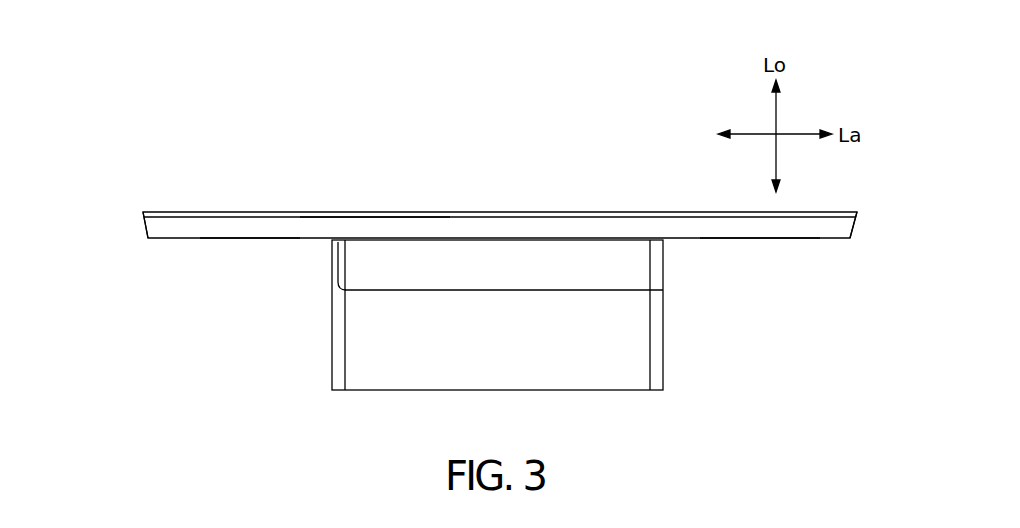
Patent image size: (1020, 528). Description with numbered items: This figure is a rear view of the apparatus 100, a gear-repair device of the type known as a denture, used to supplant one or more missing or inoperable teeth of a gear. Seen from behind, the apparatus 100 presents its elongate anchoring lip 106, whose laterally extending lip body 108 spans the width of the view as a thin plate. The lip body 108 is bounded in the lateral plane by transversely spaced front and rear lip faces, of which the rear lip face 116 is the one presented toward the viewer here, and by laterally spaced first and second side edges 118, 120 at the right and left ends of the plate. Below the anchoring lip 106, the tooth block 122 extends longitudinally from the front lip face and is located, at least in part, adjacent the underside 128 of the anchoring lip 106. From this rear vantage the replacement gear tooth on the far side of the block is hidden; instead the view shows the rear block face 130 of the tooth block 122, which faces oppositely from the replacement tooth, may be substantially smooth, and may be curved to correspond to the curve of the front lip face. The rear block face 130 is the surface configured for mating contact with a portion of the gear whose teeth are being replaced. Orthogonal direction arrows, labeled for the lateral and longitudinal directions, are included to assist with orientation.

The apparatus 100 is at (785, 342).
The anchoring lip 106 is at (216, 201).
The lip body 108 is at (372, 232).
The rear lip face 116 is at (758, 228).
The first side edge 118 is at (853, 225).
The second side edge 120 is at (145, 229).
The tooth block 122 is at (688, 378).
The underside 128 is at (242, 240).
The rear block face 130 is at (520, 353).